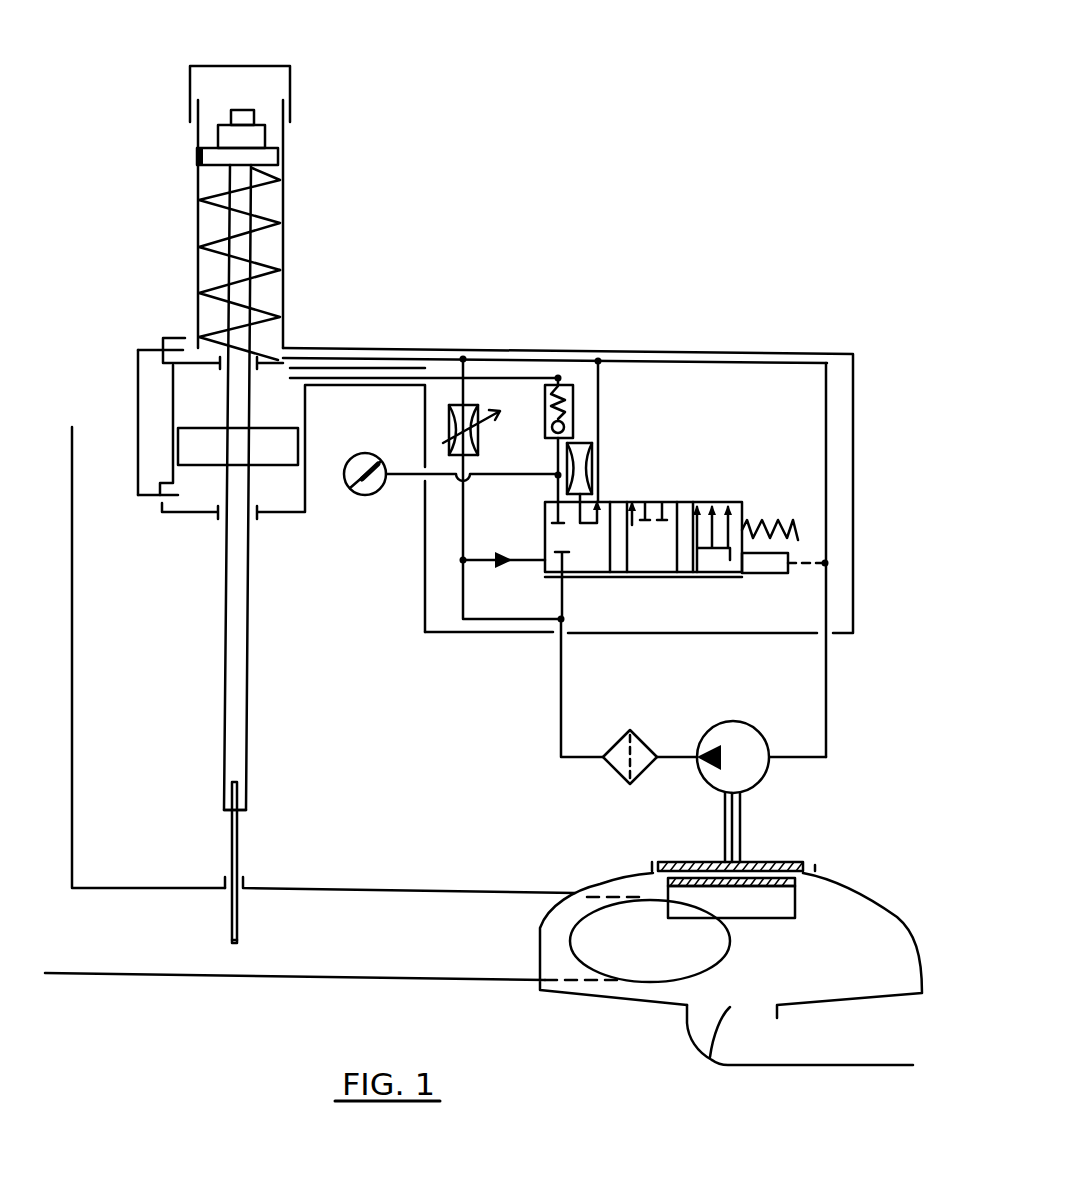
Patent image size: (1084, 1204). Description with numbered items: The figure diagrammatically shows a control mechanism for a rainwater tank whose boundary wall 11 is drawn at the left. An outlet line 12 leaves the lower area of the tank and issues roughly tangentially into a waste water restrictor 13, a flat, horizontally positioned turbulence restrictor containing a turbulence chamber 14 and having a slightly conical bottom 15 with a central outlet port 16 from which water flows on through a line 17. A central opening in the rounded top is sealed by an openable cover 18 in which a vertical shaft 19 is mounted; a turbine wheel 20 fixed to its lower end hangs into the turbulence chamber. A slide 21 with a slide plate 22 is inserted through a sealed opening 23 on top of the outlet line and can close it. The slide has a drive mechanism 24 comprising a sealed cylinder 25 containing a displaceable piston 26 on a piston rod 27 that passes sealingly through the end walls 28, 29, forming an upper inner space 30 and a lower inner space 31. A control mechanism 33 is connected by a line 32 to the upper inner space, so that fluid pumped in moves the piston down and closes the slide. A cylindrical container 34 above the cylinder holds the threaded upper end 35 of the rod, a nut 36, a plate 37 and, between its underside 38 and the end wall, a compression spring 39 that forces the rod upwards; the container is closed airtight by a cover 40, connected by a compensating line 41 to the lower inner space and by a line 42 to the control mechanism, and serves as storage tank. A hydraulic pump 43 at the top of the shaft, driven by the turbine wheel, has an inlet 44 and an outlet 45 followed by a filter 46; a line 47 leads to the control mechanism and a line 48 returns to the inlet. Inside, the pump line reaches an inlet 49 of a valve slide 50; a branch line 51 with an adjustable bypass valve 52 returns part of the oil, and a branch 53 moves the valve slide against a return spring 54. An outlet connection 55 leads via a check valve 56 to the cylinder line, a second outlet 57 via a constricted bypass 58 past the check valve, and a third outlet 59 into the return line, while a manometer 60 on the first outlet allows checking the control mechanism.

The boundary wall 11 is at (72, 585).
The outlet line 12 is at (135, 920).
The waste water restrictor 13 is at (882, 868).
The turbulence chamber 14 is at (828, 900).
The bottom 15 is at (620, 998).
The outlet port 16 is at (706, 1048).
The line 17 is at (853, 1043).
The cover 18 is at (670, 862).
The shaft 19 is at (741, 820).
The turbine wheel 20 is at (762, 905).
The slide 21 is at (270, 819).
The slide plate 22 is at (238, 858).
The opening 23 is at (233, 905).
The drive mechanism 24 is at (111, 339).
The cylinder 25 is at (306, 405).
The piston 26 is at (298, 447).
The piston rod 27 is at (253, 579).
The end wall 28 is at (207, 514).
The end wall 29 is at (196, 338).
The inner space 30 is at (285, 345).
The inner space 31 is at (212, 488).
The line 32 is at (392, 377).
The control mechanism 33 is at (709, 296).
The cylindrical container 34 is at (284, 212).
The upper end 35 is at (245, 113).
The nut 36 is at (243, 134).
The plate 37 is at (262, 157).
The underside 38 is at (197, 165).
The compression spring 39 is at (270, 263).
The cover 40 is at (233, 66).
The compensating line 41 is at (138, 427).
The line 42 is at (346, 358).
The hydraulic pump 43 is at (745, 742).
The inlet 44 is at (772, 760).
The outlet 45 is at (675, 756).
The filter 46 is at (605, 748).
The line 47 is at (561, 692).
The line 48 is at (826, 695).
The inlet 49 is at (563, 618).
The valve slide 50 is at (669, 446).
The branch line 51 is at (463, 525).
The bypass valve 52 is at (470, 404).
The branch 53 is at (478, 563).
The return spring 54 is at (762, 492).
The outlet connection 55 is at (556, 489).
The check valve 56 is at (545, 385).
The second outlet 57 is at (598, 504).
The bypass 58 is at (590, 458).
The third outlet 59 is at (598, 500).
The manometer 60 is at (368, 496).